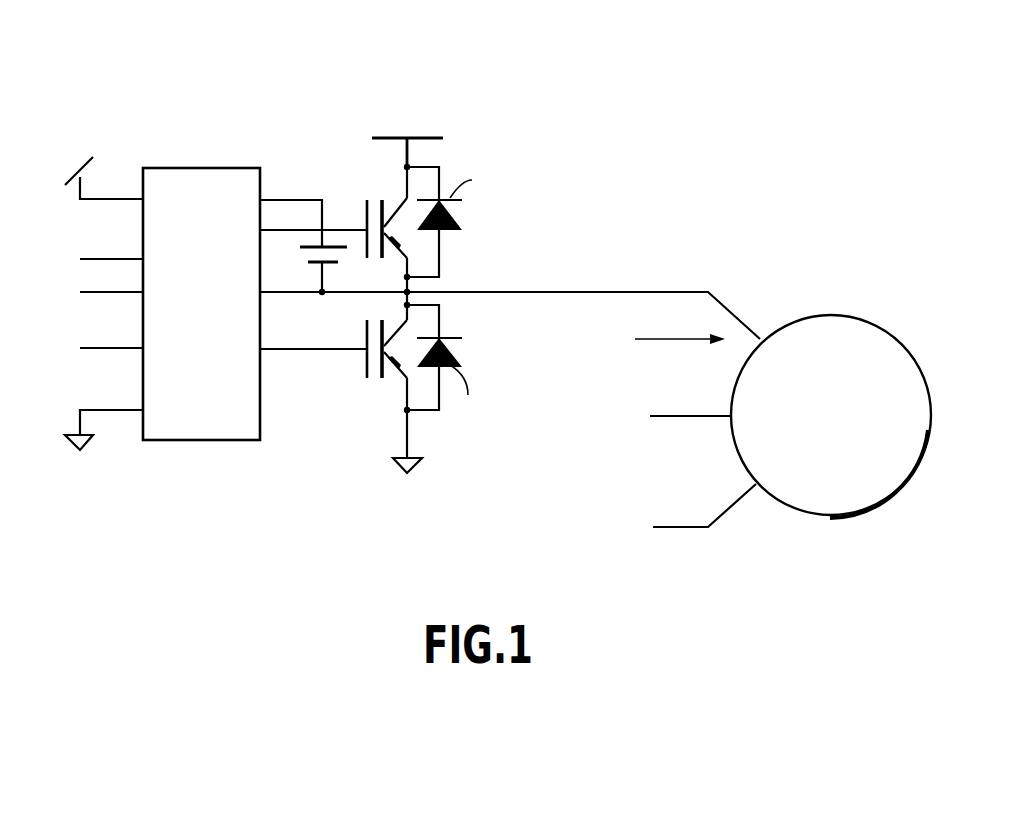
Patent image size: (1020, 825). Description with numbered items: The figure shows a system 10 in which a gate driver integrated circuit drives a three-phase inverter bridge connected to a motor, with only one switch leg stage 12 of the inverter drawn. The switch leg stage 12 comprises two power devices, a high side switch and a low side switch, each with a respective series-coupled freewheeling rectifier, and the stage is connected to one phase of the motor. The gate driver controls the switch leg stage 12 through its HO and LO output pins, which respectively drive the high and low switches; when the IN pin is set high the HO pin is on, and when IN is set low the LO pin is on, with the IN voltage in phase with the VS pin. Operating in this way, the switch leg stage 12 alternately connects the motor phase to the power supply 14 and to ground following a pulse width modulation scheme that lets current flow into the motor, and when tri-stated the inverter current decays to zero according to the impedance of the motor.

The system 10 is at (792, 125).
The switch leg stage 12 is at (358, 434).
The power supply 14 is at (408, 65).